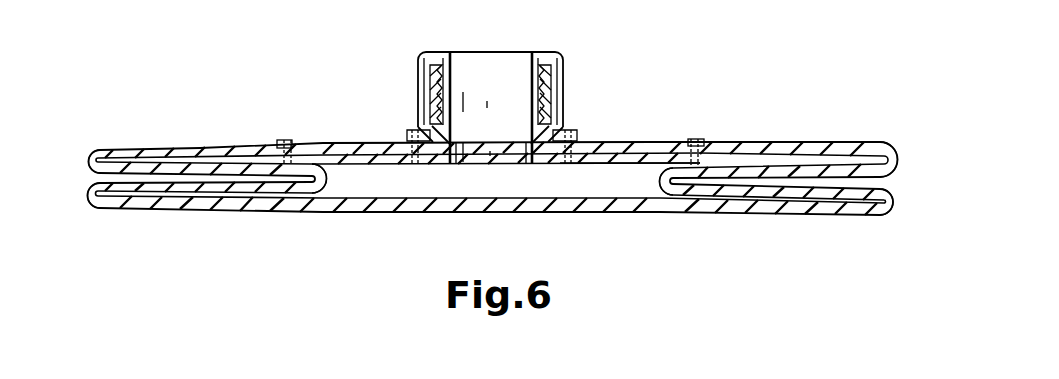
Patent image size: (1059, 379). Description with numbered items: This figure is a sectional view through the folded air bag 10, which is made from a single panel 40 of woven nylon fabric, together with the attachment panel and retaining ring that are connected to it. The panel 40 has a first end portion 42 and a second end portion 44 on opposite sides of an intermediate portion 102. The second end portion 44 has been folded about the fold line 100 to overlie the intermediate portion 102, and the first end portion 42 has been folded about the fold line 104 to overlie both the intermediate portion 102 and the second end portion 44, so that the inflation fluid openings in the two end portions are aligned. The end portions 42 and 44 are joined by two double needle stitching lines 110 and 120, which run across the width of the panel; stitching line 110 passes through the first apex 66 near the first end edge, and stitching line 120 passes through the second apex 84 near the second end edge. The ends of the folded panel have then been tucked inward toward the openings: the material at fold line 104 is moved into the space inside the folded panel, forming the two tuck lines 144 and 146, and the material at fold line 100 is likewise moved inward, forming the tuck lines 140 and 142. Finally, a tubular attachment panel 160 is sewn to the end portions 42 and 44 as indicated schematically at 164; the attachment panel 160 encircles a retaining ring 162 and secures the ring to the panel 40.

The air bag 10 is at (180, 78).
The panel 40 is at (225, 218).
The first end portion 42 is at (345, 143).
The second end portion 44 is at (602, 164).
The first apex 66 is at (277, 145).
The second apex 84 is at (722, 141).
The fold line 100 is at (328, 183).
The intermediate portion 102 is at (495, 213).
The fold line 104 is at (652, 190).
The double needle stitching line 110 is at (291, 140).
The double needle stitching line 120 is at (690, 140).
The tuck line 140 is at (88, 162).
The tuck line 142 is at (88, 198).
The tuck line 144 is at (897, 152).
The tuck line 146 is at (894, 204).
The tubular attachment panel 160 is at (563, 56).
The retaining ring 162 is at (432, 80).
The stitching 164 is at (413, 130).